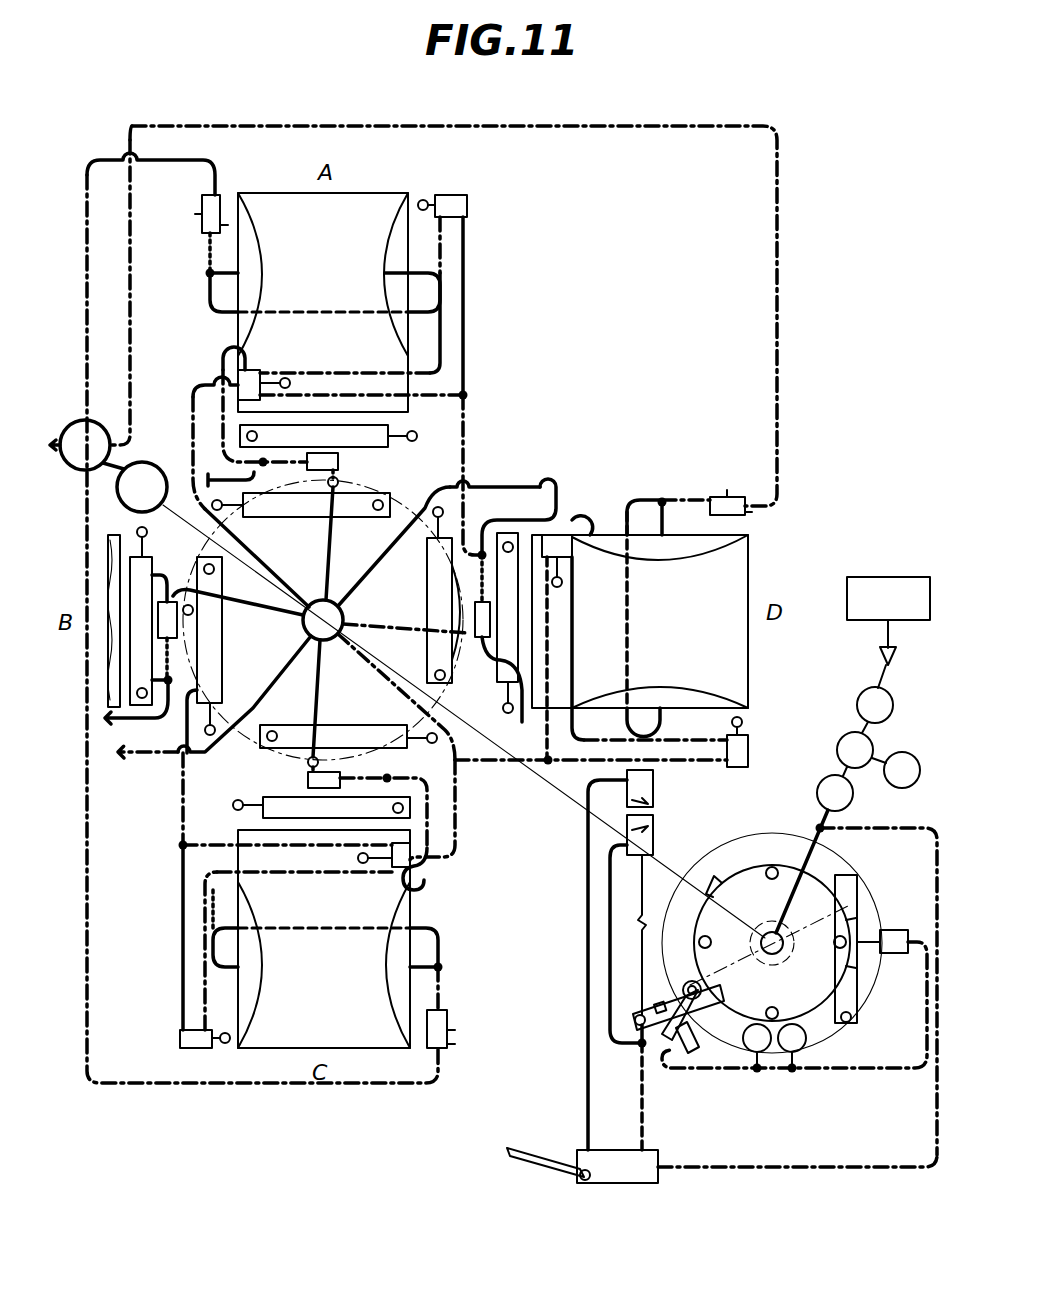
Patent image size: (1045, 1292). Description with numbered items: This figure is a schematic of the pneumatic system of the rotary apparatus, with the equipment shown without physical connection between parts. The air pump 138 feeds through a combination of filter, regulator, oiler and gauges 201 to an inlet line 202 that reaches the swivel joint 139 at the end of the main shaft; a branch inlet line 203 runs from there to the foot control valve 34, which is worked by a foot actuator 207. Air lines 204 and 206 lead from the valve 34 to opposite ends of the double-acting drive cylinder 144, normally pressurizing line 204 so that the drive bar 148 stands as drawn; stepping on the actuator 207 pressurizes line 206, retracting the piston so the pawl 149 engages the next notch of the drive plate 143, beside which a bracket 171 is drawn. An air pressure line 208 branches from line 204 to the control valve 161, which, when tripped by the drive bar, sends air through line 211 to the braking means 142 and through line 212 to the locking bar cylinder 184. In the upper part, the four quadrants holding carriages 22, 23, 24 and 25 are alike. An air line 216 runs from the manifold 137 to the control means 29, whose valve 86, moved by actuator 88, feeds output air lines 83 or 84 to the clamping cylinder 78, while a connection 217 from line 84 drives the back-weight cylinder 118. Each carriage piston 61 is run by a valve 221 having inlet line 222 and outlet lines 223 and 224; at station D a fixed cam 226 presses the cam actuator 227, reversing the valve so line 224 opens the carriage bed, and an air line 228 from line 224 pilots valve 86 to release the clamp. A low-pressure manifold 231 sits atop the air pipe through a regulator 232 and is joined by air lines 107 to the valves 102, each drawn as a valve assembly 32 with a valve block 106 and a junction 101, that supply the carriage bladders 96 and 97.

The air lines 107 is at (103, 160).
The valve block 106 is at (190, 210).
The valve assembly 32 is at (180, 218).
The valves 102 is at (210, 234).
The carriage 22 is at (405, 193).
The cylinder of the clamping means 78 is at (467, 205).
The bladder 96 is at (255, 282).
The bladder 97 is at (388, 282).
The output air line 83 is at (464, 306).
The output air line 84 is at (428, 370).
The air line 228 is at (224, 358).
The control means 29 is at (262, 370).
The low-pressure manifold 231 is at (98, 422).
The air line 216 is at (192, 415).
The regulator 232 is at (146, 466).
The air line 217 is at (463, 432).
The outlet line 224 is at (492, 530).
The outlet line 223 is at (515, 708).
The carriage piston 61 is at (406, 442).
The valve 221 is at (338, 468).
The cylinder 118 is at (272, 508).
The cam actuator 227 is at (330, 490).
The air inlet line 222 is at (338, 540).
The manifold 137 is at (326, 600).
The fixed cam 226 is at (450, 576).
The valve 86 is at (585, 548).
The actuator 88 is at (566, 586).
The carriage 25 is at (748, 568).
The conduit junction 101 is at (664, 502).
The carriage 23 is at (104, 678).
The carriage 24 is at (250, 1050).
The air pump 138 is at (900, 560).
The combination of filter, regulator, oiler and gauges 201 is at (828, 745).
The inlet line 202 is at (806, 850).
The air line 204 is at (588, 880).
The air line 206 is at (610, 988).
The drive cylinder 144 is at (644, 830).
The drive plate 143 is at (752, 878).
The swivel joint 139 is at (780, 922).
The drive bar 148 is at (750, 978).
The pawl bracket 171 is at (852, 902).
The locking bar cylinder 184 is at (894, 930).
The pawl 149 is at (706, 994).
The control valve 161 is at (680, 1050).
The air line 211 is at (726, 1072).
The braking means 142 is at (776, 1078).
The line 212 is at (866, 1072).
The air pressure line 208 is at (642, 1132).
The foot actuator 207 is at (532, 1162).
The foot control valve 34 is at (615, 1183).
The branch inlet line 203 is at (804, 1170).